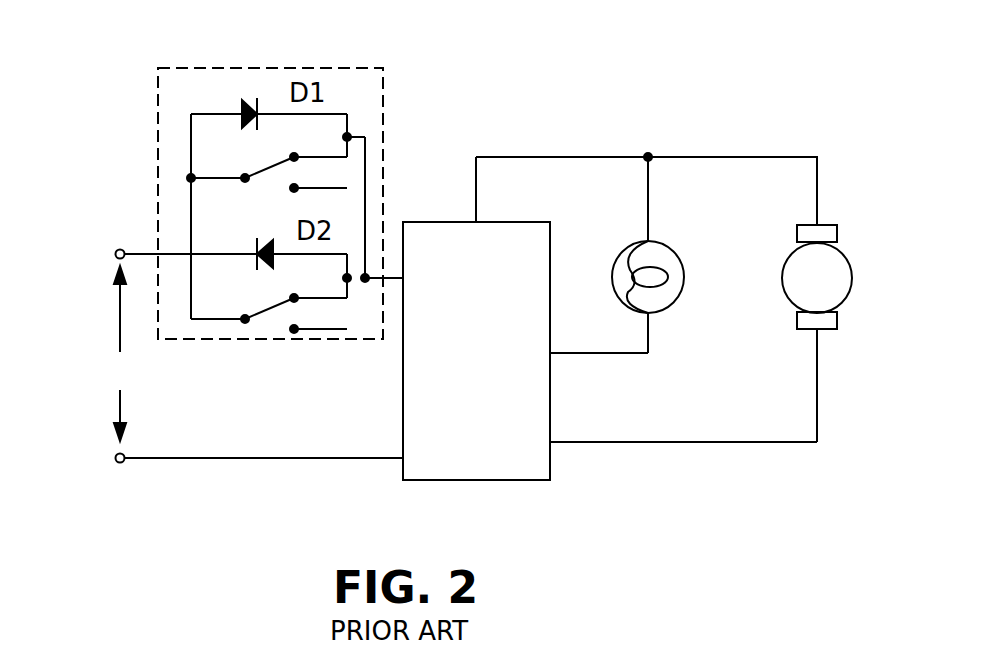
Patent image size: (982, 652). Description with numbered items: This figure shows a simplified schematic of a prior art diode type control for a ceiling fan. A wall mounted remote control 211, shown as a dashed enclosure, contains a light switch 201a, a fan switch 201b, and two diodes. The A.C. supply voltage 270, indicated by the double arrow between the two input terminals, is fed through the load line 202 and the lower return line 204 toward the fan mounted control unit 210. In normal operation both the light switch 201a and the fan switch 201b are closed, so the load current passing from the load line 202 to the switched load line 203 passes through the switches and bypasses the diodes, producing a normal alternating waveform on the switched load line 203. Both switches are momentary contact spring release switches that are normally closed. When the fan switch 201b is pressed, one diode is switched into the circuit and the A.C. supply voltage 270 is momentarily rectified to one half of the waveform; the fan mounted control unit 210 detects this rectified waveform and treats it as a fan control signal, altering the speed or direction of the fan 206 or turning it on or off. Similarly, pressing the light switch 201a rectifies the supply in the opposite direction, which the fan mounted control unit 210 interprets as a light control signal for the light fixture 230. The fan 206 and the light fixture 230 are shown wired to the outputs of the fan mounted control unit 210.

The light switch 201a is at (252, 160).
The fan switch 201b is at (255, 324).
The load line 202 is at (119, 249).
The switched load line 203 is at (393, 276).
The second input terminal 204 is at (208, 462).
The fan 206 is at (845, 260).
The fan mounted control unit 210 is at (550, 460).
The wall mounted remote control 211 is at (383, 88).
The light fixture 230 is at (677, 256).
The A.C. supply voltage 270 is at (62, 370).